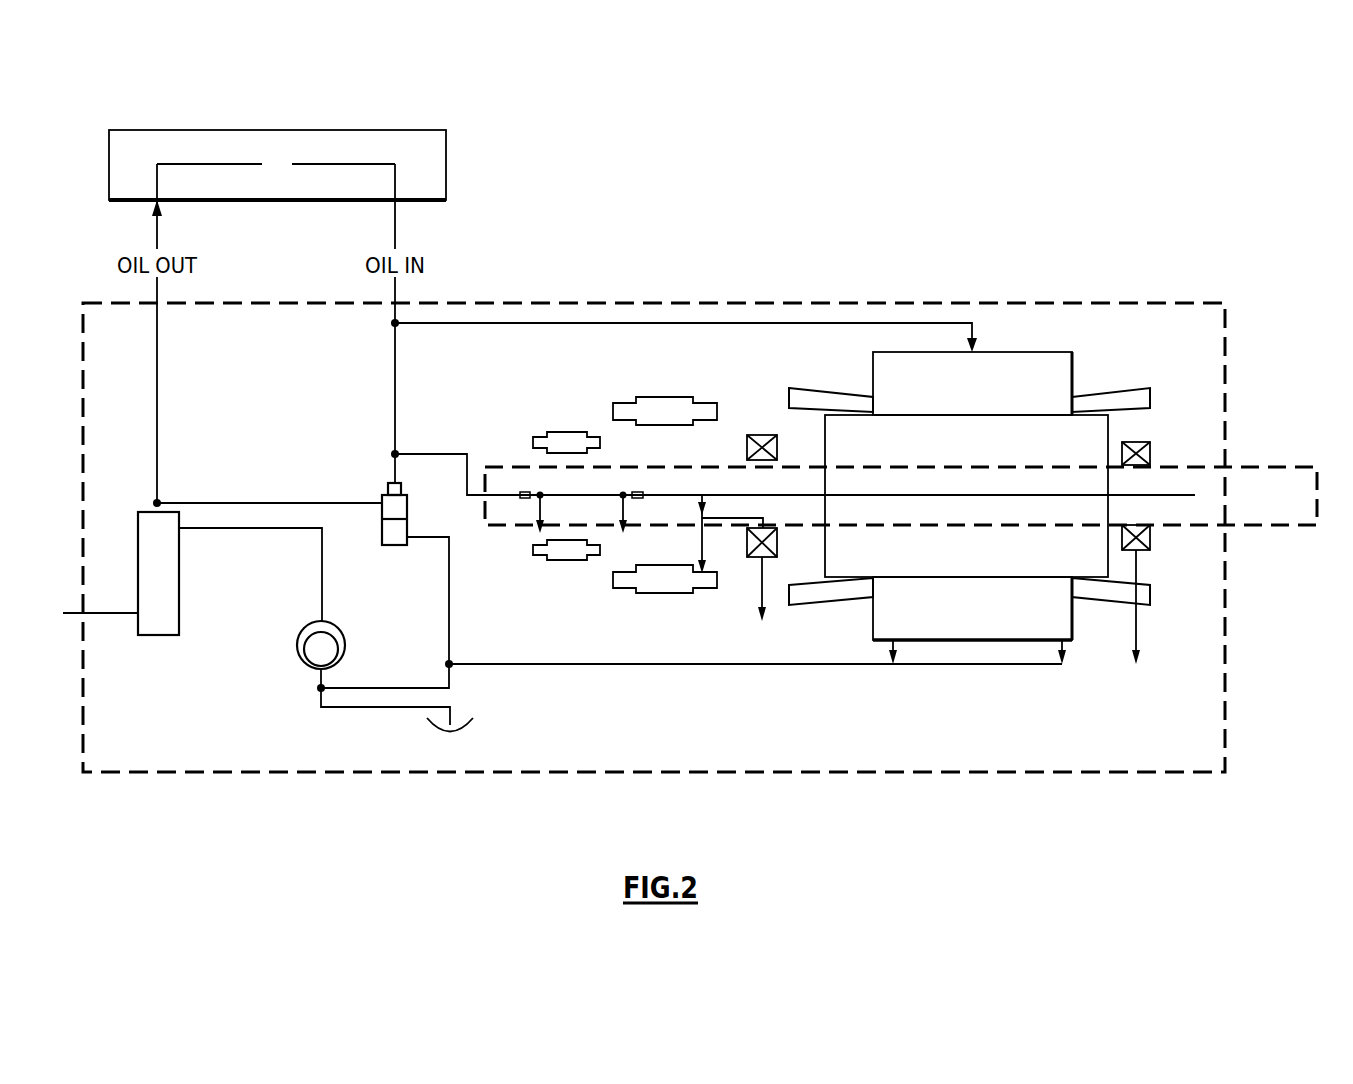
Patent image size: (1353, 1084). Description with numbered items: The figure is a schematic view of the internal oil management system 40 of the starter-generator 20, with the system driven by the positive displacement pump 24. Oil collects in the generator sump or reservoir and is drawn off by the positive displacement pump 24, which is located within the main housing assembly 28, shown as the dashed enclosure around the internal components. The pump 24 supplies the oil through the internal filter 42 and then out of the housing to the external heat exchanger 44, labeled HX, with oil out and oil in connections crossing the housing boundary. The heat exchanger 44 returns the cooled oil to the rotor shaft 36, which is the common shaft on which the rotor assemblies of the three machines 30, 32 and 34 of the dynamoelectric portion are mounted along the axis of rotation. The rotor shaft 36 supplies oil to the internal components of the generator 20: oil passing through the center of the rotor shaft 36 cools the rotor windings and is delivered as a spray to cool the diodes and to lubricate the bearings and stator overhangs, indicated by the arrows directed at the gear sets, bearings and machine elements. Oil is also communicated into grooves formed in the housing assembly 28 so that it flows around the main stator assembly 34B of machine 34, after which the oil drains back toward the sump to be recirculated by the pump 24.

The generator 20 is at (1106, 797).
The positive displacement pump 24 is at (313, 640).
The main housing assembly 28 is at (1033, 773).
The machine 30 is at (558, 582).
The machine 32 is at (655, 609).
The machine 34 is at (982, 494).
The main stator assembly 34B is at (955, 617).
The rotor shaft 36 is at (1270, 514).
The internal oil management system 40 is at (1144, 142).
The internal filter 42 is at (137, 637).
The heat exchanger 44 is at (446, 161).